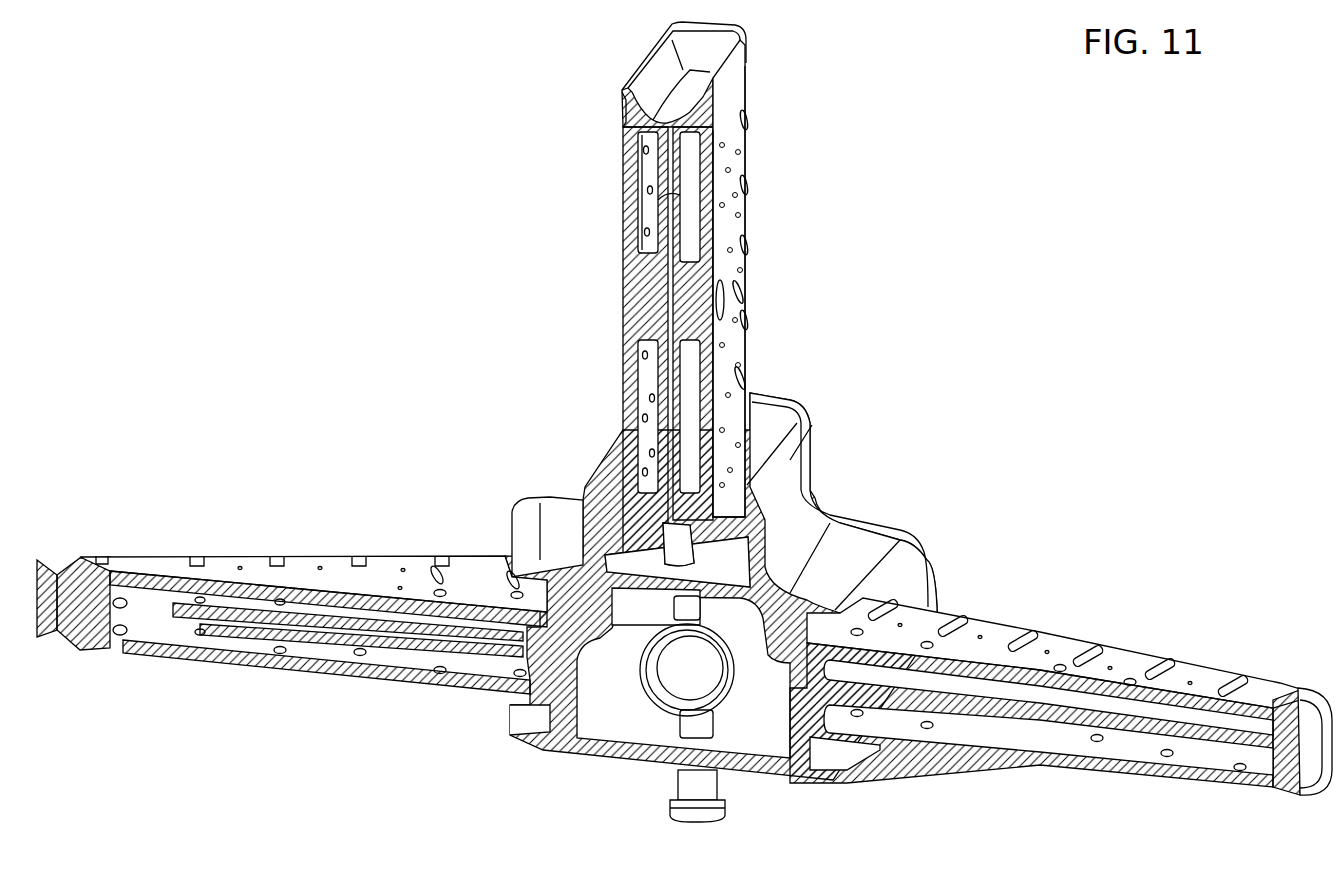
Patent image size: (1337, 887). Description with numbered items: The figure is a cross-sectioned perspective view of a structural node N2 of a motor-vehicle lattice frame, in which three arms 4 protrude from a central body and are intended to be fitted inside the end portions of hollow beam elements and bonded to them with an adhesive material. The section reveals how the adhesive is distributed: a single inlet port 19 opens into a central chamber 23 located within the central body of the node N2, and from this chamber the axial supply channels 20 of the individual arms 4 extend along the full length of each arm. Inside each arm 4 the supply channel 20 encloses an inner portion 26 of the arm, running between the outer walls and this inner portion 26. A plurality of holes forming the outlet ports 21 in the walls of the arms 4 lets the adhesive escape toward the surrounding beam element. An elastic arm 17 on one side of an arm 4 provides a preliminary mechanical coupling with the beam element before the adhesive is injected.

The arm 4 is at (747, 131).
The elastic arm 17 is at (730, 282).
The inlet port 19 is at (717, 787).
The supply channel 20 is at (647, 380).
The outlet ports 21 is at (735, 345).
The central chamber 23 is at (663, 687).
The inner portion 26 is at (665, 190).
The structural node N2 is at (997, 418).